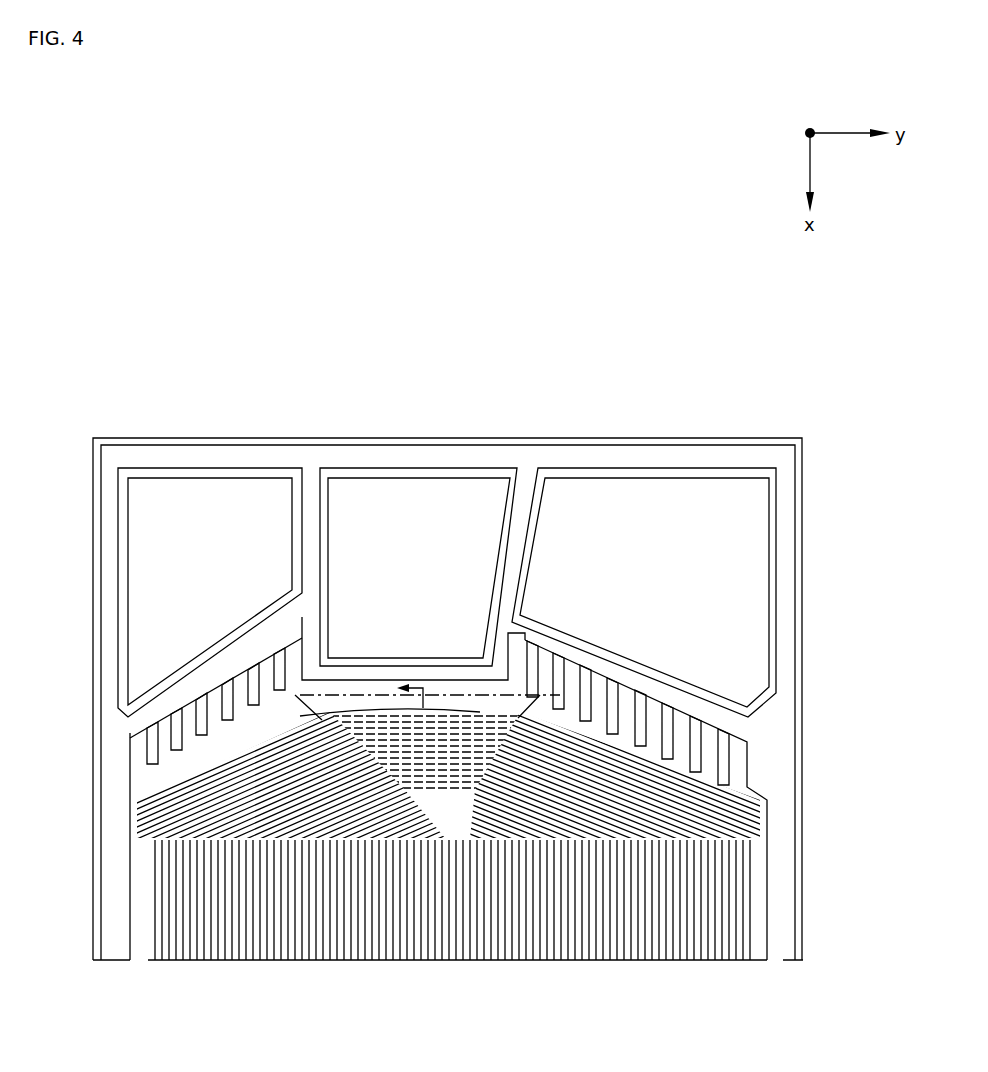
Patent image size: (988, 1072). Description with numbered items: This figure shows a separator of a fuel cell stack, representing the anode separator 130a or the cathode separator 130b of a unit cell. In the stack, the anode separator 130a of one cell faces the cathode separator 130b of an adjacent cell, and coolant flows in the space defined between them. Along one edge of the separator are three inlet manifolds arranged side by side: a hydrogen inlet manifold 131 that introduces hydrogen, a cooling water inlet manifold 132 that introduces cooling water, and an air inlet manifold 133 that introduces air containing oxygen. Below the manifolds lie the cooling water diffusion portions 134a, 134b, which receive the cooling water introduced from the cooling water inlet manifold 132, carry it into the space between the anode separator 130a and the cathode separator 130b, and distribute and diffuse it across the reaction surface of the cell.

The anode separator 130a is at (461, 631).
The cathode separator 130b is at (736, 410).
The hydrogen inlet manifold 131 is at (213, 510).
The cooling water inlet manifold 132 is at (376, 510).
The air inlet manifold 133 is at (638, 510).
The cooling water diffusion portion 134a is at (452, 645).
The cooling water diffusion portion 134b is at (447, 695).